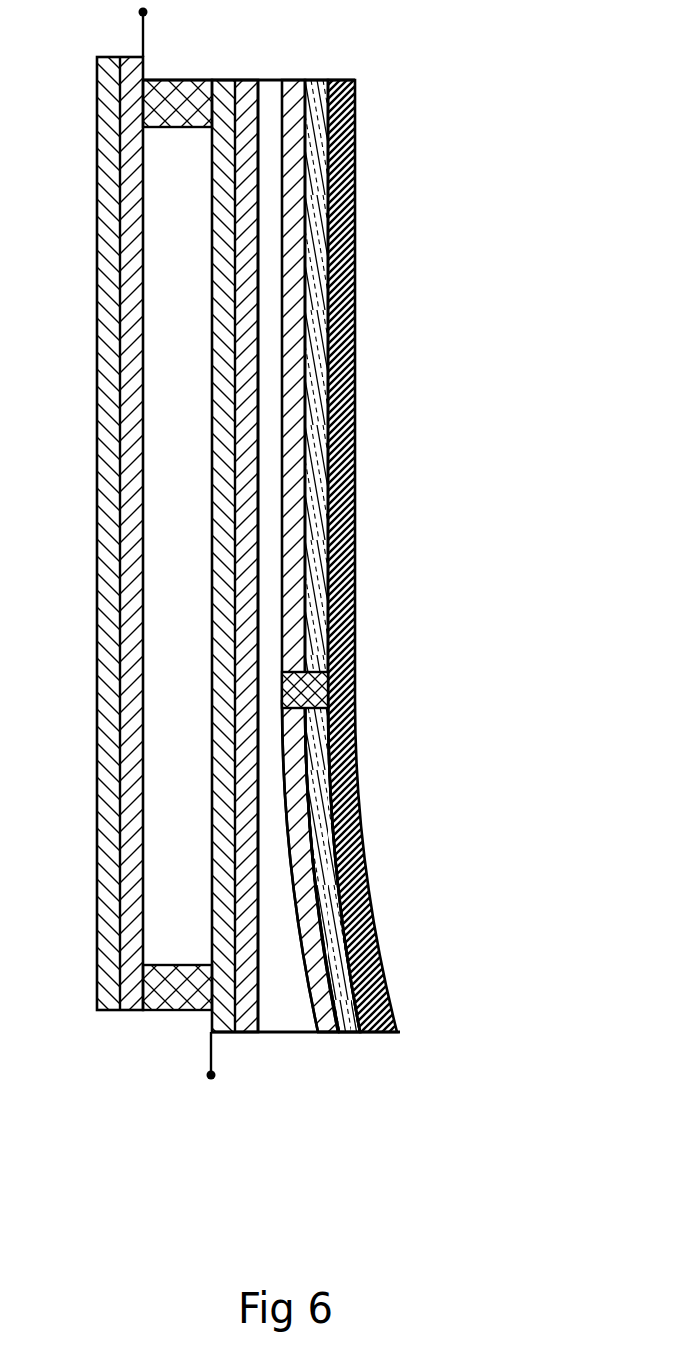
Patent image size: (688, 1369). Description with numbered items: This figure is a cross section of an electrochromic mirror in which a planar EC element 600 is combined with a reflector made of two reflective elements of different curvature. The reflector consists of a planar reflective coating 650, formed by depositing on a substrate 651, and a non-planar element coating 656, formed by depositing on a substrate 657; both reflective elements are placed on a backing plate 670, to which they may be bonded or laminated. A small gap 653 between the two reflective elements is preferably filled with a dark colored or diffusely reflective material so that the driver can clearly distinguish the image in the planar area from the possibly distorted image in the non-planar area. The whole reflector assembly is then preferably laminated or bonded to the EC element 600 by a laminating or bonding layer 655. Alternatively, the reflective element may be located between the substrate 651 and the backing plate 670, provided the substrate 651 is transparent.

The planar EC element 600 is at (173, 1062).
The planar reflective coating 650 is at (293, 215).
The substrate 651 is at (320, 313).
The gap 653 is at (330, 694).
The laminating or bonding layer 655 is at (269, 543).
The non-planar element coating 656 is at (298, 836).
The substrate 657 is at (333, 940).
The backing plate 670 is at (353, 410).